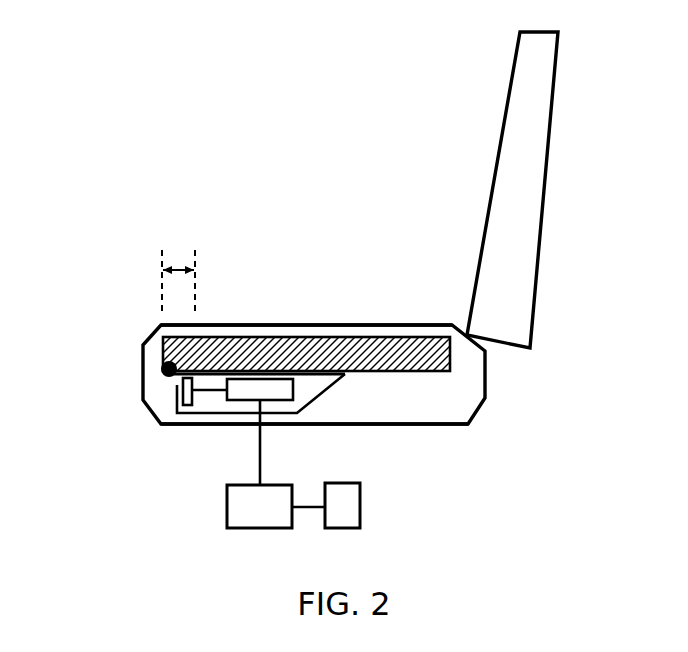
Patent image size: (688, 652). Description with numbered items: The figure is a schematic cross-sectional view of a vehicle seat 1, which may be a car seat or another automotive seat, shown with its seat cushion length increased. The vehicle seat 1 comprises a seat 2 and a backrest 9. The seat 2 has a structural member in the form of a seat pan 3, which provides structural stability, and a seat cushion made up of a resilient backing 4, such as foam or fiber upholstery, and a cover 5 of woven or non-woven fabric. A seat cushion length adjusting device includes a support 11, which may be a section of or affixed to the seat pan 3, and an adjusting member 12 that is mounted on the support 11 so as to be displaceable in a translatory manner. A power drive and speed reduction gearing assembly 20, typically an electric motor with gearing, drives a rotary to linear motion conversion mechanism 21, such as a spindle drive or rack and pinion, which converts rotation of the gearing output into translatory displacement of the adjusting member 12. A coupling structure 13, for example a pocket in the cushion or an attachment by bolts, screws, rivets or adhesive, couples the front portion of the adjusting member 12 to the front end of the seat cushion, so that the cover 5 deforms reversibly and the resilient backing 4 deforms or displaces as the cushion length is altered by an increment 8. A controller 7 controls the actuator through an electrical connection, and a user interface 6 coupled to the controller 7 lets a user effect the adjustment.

The vehicle seat 1 is at (97, 76).
The seat 2 is at (143, 340).
The seat pan 3 is at (413, 373).
The resilient backing 4 is at (285, 345).
The cover 5 is at (385, 325).
The user interface 6 is at (345, 528).
The controller 7 is at (263, 528).
The increment 8 is at (181, 265).
The backrest 9 is at (500, 130).
The support 11 is at (340, 373).
The adjusting member 12 is at (218, 370).
The coupling structure 13 is at (164, 370).
The power drive and speed reduction gearing assembly 20 is at (227, 410).
The rotary to linear motion conversion mechanism 21 is at (163, 401).